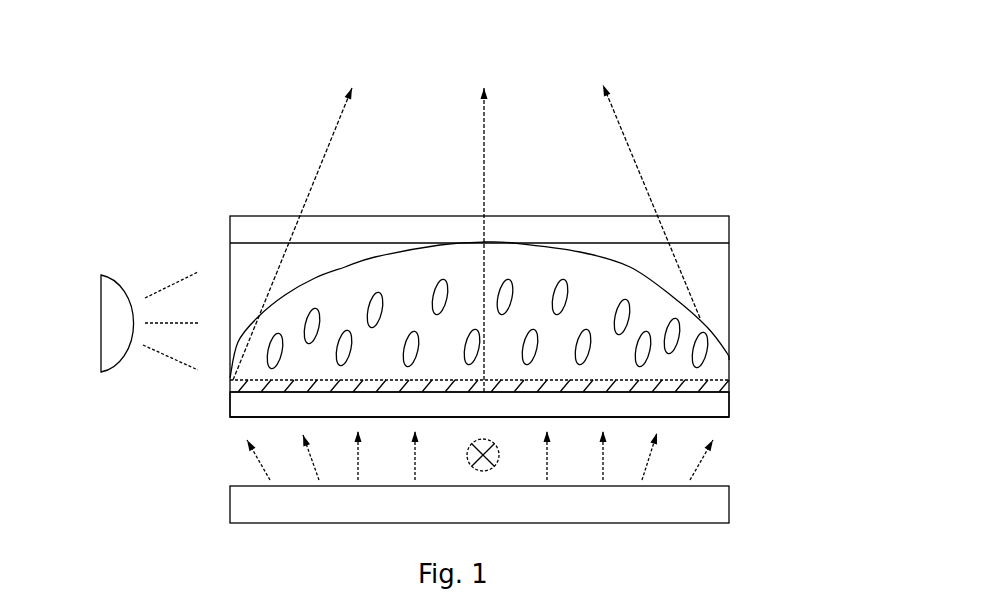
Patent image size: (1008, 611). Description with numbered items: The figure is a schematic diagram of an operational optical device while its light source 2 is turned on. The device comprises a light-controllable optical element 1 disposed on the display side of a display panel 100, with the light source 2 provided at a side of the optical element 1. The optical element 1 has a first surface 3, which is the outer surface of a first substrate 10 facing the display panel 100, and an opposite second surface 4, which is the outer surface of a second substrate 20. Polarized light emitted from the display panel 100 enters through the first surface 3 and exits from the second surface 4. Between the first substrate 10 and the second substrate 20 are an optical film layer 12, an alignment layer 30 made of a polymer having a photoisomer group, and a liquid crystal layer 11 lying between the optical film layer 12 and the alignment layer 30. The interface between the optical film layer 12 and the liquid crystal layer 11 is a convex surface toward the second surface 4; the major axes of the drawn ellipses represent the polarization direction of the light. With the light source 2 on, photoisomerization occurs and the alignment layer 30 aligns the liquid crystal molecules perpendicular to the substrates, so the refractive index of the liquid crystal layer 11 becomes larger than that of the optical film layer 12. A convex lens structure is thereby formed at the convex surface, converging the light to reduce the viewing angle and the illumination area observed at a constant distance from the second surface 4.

The light-controllable optical element 1 is at (743, 207).
The light source 2 is at (117, 308).
The first surface 3 is at (668, 419).
The second surface 4 is at (668, 213).
The first substrate 10 is at (692, 403).
The liquid crystal layer 11 is at (698, 353).
The optical film layer 12 is at (705, 272).
The second substrate 20 is at (695, 230).
The alignment layer 30 is at (729, 387).
The display panel 100 is at (693, 504).